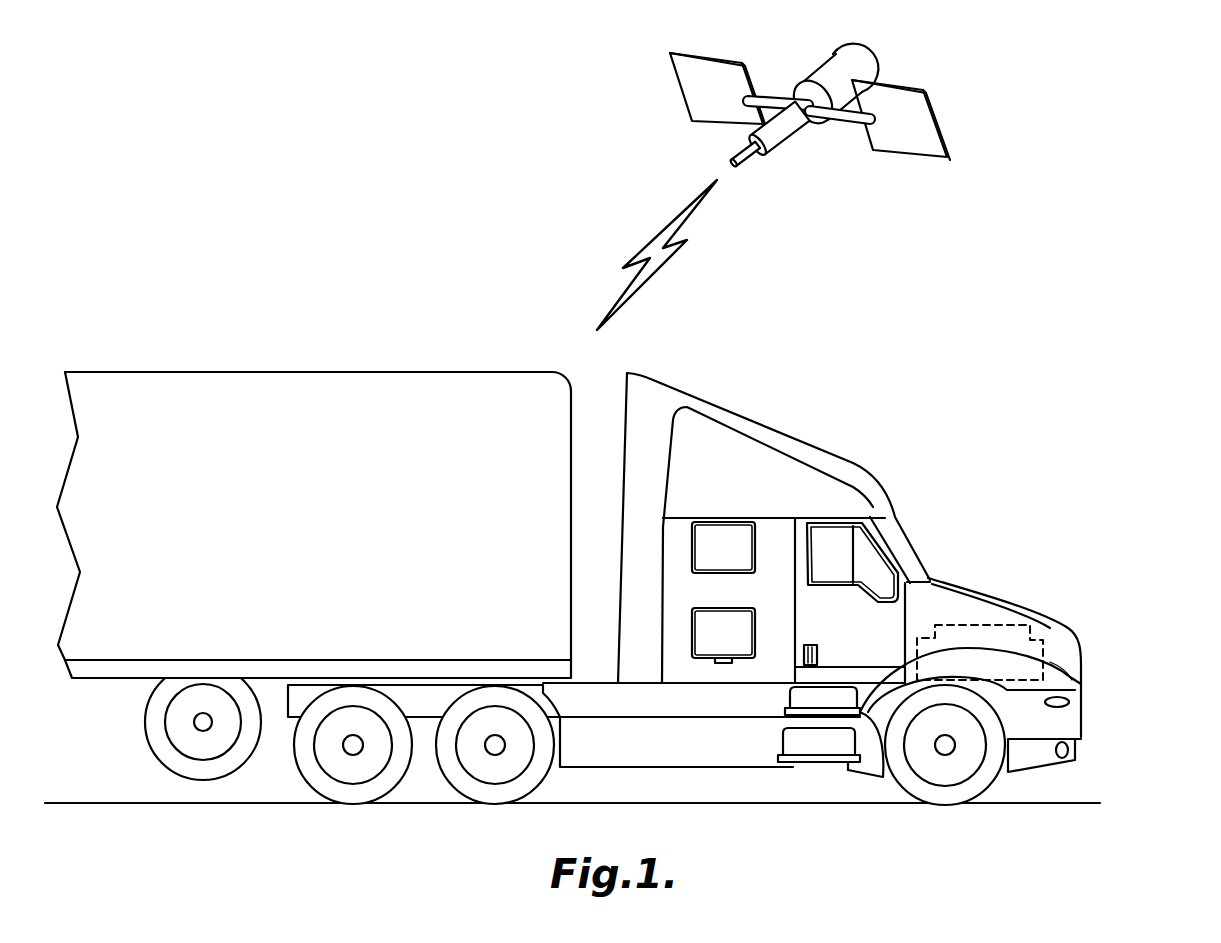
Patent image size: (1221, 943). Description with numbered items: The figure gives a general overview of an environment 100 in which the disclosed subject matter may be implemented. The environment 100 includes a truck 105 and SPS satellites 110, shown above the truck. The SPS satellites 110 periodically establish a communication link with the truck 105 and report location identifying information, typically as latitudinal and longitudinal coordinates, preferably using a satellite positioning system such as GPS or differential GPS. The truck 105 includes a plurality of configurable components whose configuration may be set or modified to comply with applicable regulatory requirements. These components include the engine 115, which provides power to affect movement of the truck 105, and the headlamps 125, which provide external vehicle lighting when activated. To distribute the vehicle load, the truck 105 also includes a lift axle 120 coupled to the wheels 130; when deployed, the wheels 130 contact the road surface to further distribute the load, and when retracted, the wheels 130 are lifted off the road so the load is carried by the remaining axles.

The environment 100 is at (1143, 164).
The truck 105 is at (856, 452).
The SPS satellites 110 is at (827, 70).
The engine 115 is at (998, 627).
The lift axle 120 is at (195, 719).
The headlamps 125 is at (1070, 673).
The wheels 130 is at (152, 737).